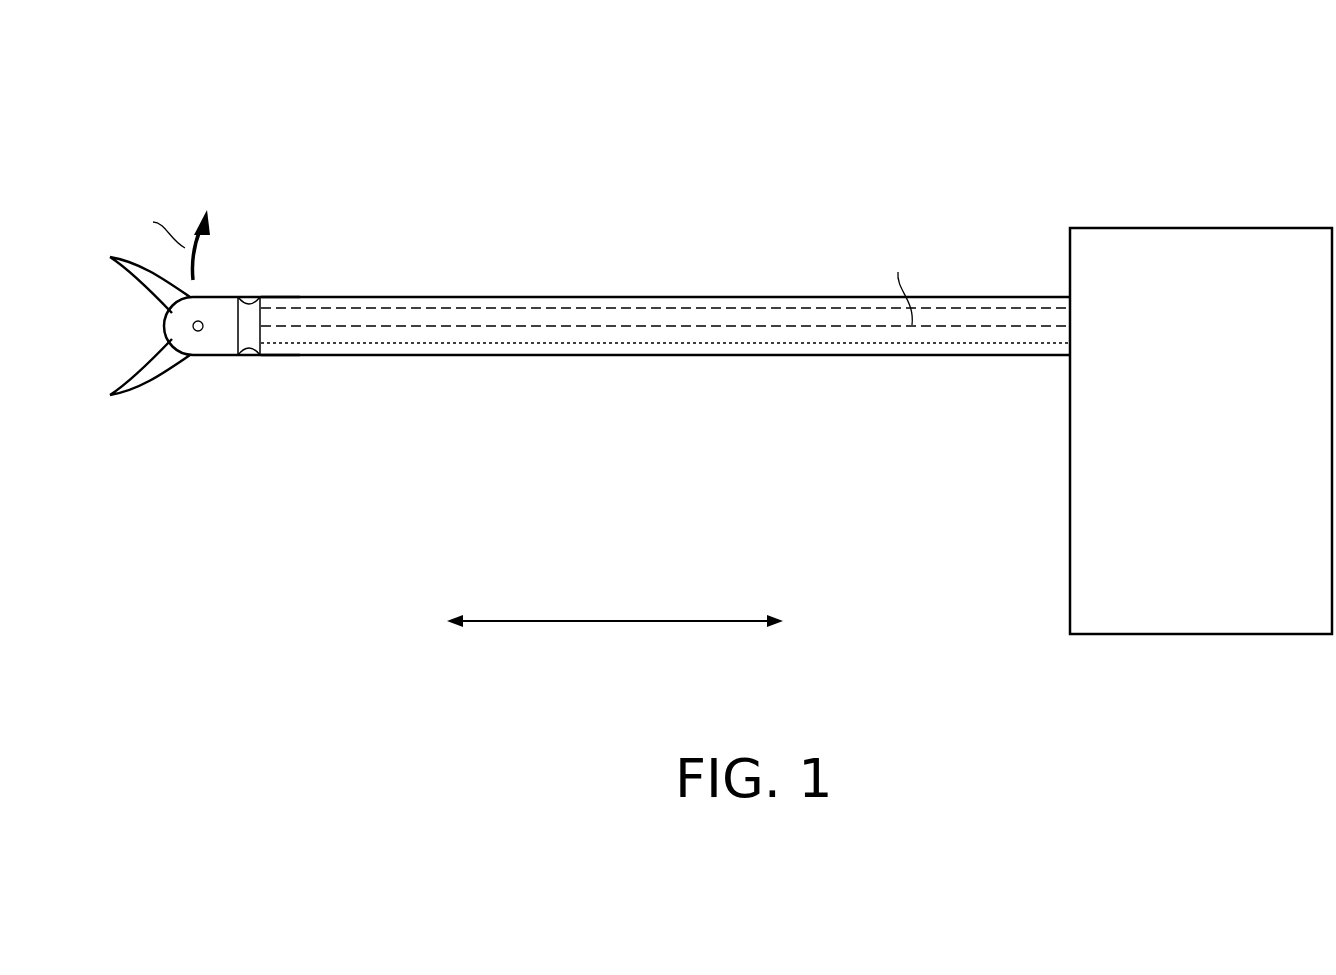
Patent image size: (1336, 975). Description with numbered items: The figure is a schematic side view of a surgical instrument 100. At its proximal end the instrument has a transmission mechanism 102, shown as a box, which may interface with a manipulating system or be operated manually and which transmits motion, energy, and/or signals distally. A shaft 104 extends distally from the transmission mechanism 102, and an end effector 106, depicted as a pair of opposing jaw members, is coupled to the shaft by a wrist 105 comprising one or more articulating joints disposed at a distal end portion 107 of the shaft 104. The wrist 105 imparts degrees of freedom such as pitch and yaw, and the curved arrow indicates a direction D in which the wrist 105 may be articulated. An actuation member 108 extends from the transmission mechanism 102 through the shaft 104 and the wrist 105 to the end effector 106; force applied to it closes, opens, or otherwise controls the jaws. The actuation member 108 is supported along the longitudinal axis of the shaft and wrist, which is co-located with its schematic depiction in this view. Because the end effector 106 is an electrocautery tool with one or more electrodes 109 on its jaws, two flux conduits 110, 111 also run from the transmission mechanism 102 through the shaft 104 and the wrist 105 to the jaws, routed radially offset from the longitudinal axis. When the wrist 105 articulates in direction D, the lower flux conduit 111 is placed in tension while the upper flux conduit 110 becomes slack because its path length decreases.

The instrument 100 is at (956, 78).
The transmission mechanism 102 is at (1200, 252).
The shaft 104 is at (631, 356).
The wrist 105 is at (250, 316).
The end effector 106 is at (156, 348).
The distal end portion 107 is at (268, 348).
The actuation member 108 is at (785, 325).
The electrode 109 is at (145, 368).
The flux conduit 110 is at (518, 305).
The flux conduit 111 is at (475, 343).